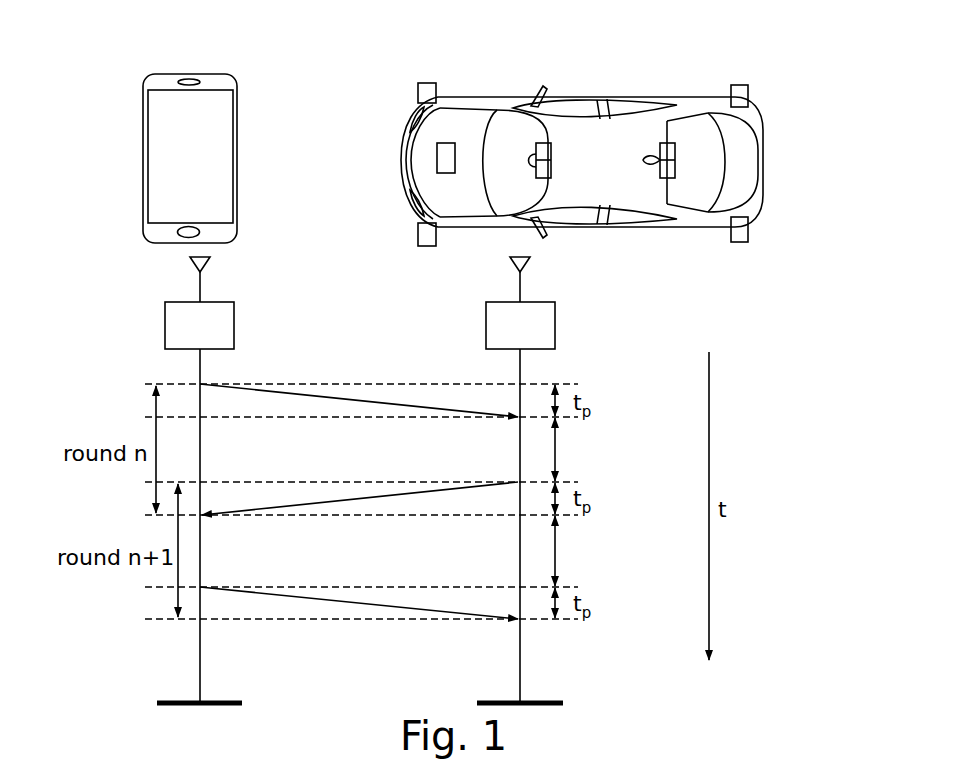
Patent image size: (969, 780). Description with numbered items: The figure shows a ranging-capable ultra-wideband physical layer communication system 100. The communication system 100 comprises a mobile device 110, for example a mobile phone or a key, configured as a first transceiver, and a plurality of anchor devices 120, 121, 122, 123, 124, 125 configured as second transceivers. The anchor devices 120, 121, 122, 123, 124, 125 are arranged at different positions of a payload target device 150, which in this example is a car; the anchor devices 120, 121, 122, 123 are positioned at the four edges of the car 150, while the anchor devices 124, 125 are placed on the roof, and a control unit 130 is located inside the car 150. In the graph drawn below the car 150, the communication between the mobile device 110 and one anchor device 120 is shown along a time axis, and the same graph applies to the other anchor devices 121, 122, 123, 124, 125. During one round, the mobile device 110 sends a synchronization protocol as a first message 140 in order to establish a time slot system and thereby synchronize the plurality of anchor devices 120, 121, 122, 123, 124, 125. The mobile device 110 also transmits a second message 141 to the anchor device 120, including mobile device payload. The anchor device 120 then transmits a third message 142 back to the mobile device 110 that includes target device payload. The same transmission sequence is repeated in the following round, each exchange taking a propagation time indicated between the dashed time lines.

The communication system 100 is at (187, 211).
The mobile device 110 is at (220, 148).
The anchor device 120 is at (423, 79).
The anchor device 121 is at (743, 76).
The anchor device 122 is at (411, 237).
The anchor device 123 is at (756, 231).
The anchor device 124 is at (556, 152).
The anchor device 125 is at (652, 148).
The control unit 130 is at (437, 154).
The first message 140 is at (359, 469).
The second message 141 is at (420, 406).
The third message 142 is at (335, 500).
The payload target device 150 is at (776, 145).